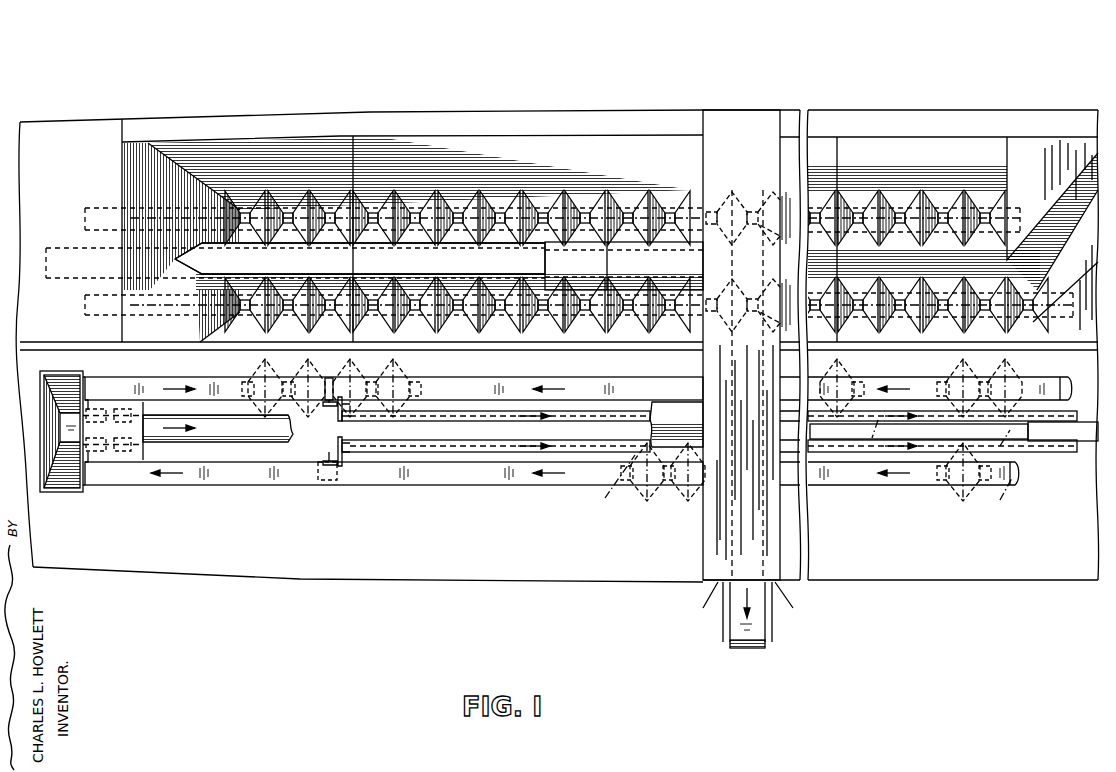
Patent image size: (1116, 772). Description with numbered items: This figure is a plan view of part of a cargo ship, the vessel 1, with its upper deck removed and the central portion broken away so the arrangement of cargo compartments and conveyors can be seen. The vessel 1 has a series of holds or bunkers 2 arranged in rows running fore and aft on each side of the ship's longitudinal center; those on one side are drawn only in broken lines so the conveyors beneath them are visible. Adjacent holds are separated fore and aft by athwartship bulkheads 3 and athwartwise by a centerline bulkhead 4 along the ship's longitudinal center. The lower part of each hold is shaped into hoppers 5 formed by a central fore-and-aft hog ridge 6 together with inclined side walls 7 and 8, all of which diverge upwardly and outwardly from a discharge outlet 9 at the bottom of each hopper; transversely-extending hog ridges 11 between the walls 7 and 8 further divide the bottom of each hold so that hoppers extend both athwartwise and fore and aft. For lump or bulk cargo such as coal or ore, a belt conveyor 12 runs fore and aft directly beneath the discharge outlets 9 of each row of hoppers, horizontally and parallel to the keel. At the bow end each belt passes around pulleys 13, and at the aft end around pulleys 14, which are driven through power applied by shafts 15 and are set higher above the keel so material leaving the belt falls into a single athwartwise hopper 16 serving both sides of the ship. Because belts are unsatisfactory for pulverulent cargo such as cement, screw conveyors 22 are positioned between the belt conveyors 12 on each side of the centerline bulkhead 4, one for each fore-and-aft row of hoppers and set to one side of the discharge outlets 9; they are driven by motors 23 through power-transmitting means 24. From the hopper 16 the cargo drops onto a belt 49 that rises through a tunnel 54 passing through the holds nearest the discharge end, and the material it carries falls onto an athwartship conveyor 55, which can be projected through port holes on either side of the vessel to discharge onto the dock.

The vessel 1 is at (735, 68).
The holds or bunkers 2 is at (326, 142).
The athwartship bulkheads 3 is at (355, 136).
The centerline bulkhead 4 is at (566, 350).
The hoppers 5 is at (282, 197).
The hog ridge 6 is at (952, 262).
The inclined side wall 7 is at (988, 160).
The inclined side wall 8 is at (1032, 328).
The discharge outlet 9 is at (668, 212).
The transversely-extending hog ridges 11 is at (604, 198).
The belt conveyor 12 is at (490, 383).
The pulleys 13 is at (1073, 378).
The pulleys 14 is at (88, 384).
The shafts 15 is at (93, 408).
The hopper 16 is at (64, 475).
The screw conveyors 22 is at (420, 448).
The motors 23 is at (310, 384).
The power-transmitting means 24 is at (330, 454).
The belt 49 is at (338, 262).
The tunnel 54 is at (632, 286).
The athwartship conveyor 55 is at (736, 648).